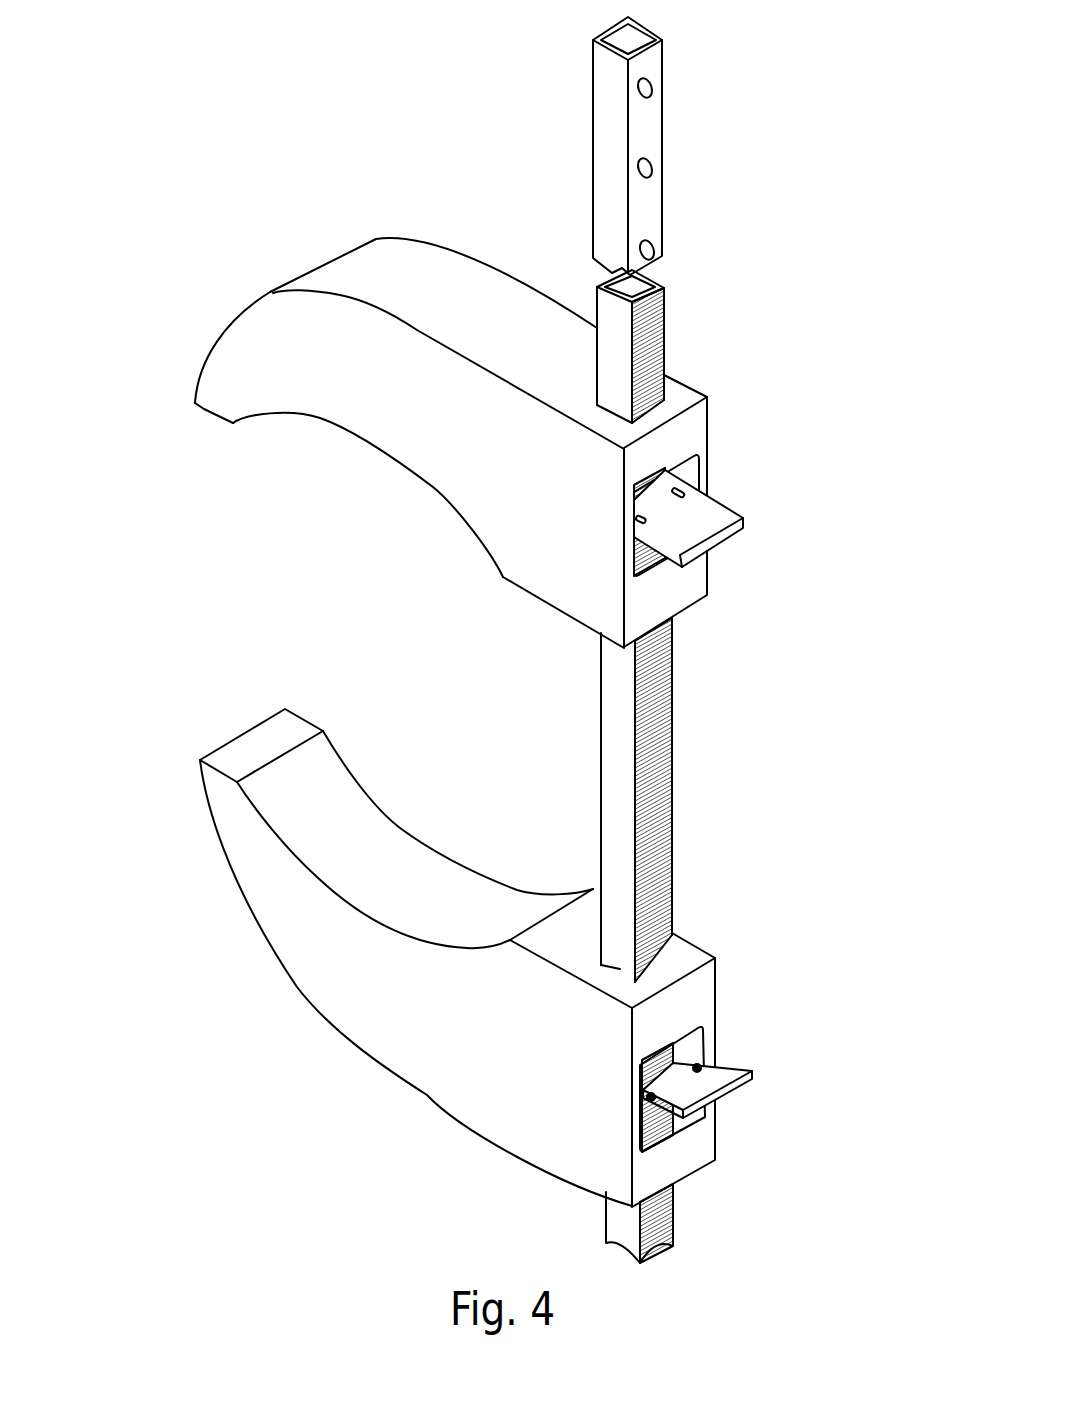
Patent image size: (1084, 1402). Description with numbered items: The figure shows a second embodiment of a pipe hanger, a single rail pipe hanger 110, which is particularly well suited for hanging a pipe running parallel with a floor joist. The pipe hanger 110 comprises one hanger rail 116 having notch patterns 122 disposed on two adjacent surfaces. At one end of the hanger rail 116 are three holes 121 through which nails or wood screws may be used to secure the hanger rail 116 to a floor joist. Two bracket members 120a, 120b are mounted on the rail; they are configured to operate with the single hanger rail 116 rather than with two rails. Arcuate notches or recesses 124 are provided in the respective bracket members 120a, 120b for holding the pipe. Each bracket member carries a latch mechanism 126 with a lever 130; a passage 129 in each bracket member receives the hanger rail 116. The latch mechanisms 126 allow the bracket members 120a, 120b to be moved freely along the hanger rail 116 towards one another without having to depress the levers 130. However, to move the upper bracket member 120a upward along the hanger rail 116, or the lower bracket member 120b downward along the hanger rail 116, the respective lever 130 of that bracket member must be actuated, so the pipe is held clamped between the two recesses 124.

The single rail pipe hanger 110 is at (380, 180).
The hanger rail 116 is at (611, 130).
The holes 121 is at (652, 83).
The notch patterns 122 is at (665, 348).
The sleeve 129 is at (608, 414).
The bracket member 120a is at (235, 398).
The bracket member 120b is at (252, 752).
The arcuate notches or recesses 124 is at (393, 462).
The latch mechanisms 126 is at (724, 465).
The levers 130 is at (745, 519).